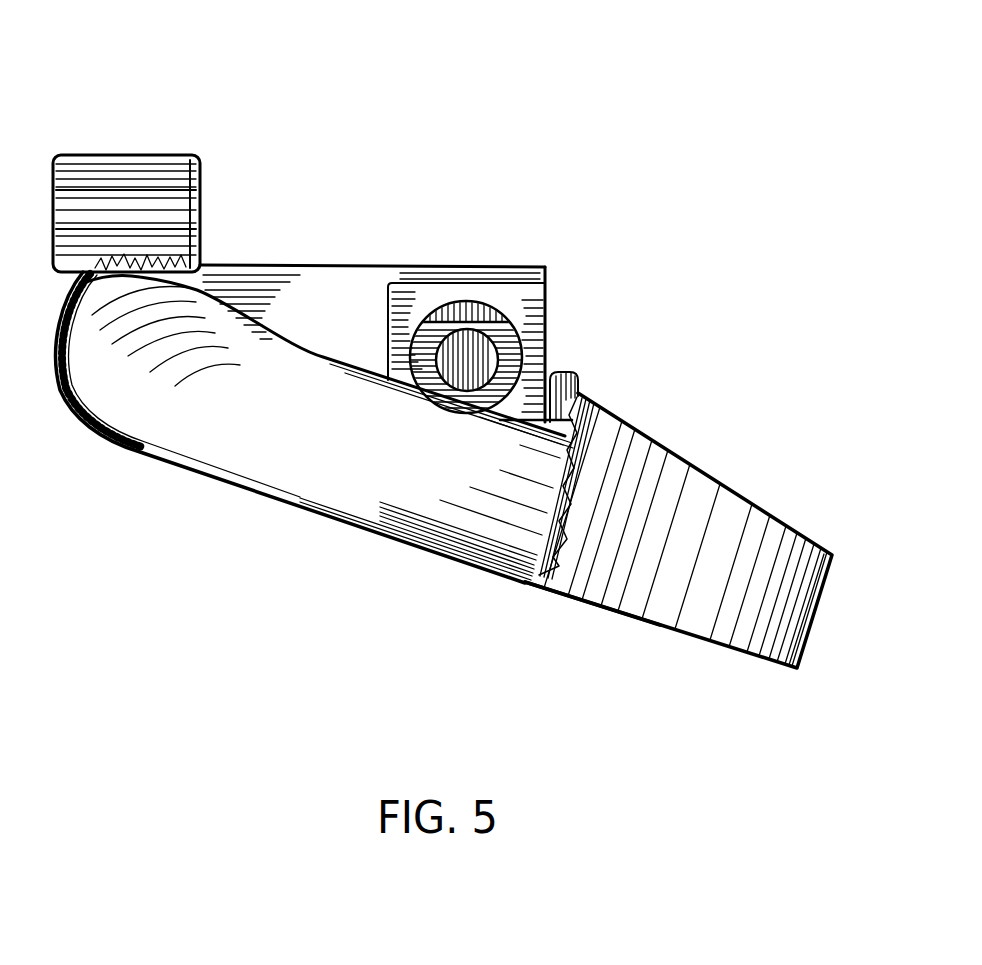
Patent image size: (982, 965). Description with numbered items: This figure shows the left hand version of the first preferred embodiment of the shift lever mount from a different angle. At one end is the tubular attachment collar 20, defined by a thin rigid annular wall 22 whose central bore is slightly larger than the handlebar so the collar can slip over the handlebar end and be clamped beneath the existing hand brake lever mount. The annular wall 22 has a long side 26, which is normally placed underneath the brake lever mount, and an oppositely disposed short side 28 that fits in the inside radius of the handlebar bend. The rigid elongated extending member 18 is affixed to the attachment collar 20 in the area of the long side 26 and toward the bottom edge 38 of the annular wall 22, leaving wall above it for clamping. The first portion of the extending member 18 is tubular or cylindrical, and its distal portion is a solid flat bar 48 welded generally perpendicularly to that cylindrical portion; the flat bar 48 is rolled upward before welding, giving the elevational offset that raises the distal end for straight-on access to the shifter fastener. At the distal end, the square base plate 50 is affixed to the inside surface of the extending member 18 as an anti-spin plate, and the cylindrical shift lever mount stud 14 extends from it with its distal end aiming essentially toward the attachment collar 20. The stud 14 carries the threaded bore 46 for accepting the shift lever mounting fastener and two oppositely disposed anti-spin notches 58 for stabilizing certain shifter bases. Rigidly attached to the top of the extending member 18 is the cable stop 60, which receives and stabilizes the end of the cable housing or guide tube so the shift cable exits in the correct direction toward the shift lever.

The shift lever mount stud 14 is at (413, 330).
The extending member 18 is at (280, 266).
The attachment collar 20 is at (640, 580).
The annular wall 22 is at (698, 607).
The long side 26 is at (573, 385).
The short side 28 is at (823, 600).
The bottom edge 38 is at (590, 607).
The threaded bore 46 is at (485, 360).
The flat bar 48 is at (348, 273).
The square base plate 50 is at (517, 298).
The anti-spin notches 58 is at (477, 317).
The cable stop 60 is at (153, 155).